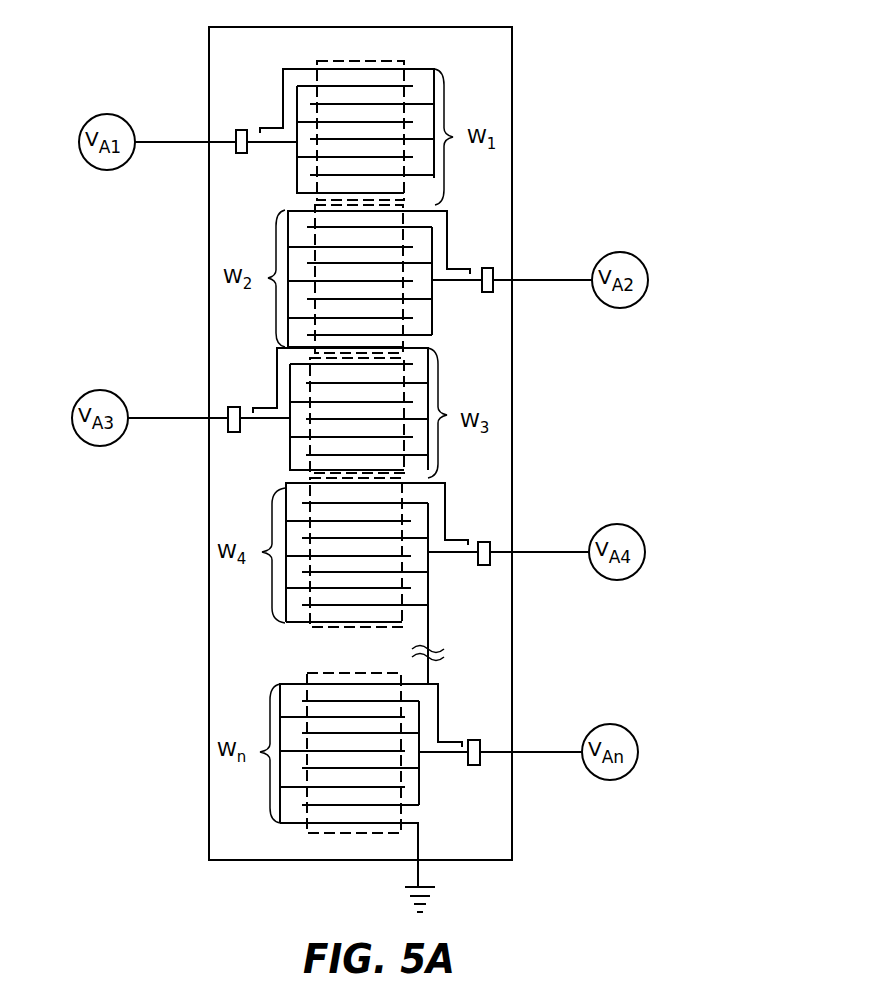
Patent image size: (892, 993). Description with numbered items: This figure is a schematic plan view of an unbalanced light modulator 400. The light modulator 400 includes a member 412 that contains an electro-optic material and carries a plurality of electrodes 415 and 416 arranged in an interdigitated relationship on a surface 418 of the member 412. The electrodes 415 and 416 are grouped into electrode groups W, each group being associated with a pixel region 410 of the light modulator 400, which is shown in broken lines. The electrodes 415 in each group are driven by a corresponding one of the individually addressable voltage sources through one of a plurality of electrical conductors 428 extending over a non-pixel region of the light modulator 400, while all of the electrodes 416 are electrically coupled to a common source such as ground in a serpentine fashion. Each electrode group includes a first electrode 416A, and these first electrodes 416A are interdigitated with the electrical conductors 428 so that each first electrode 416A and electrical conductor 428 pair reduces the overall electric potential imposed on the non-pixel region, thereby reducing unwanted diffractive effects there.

The light modulator 400 is at (560, 70).
The pixel region 410 is at (363, 673).
The member 412 is at (208, 832).
The electrodes 415 is at (312, 123).
The electrodes 416 is at (410, 138).
The first electrode 416A is at (270, 128).
The surface 418 is at (264, 849).
The electrical conductor 428 is at (267, 144).